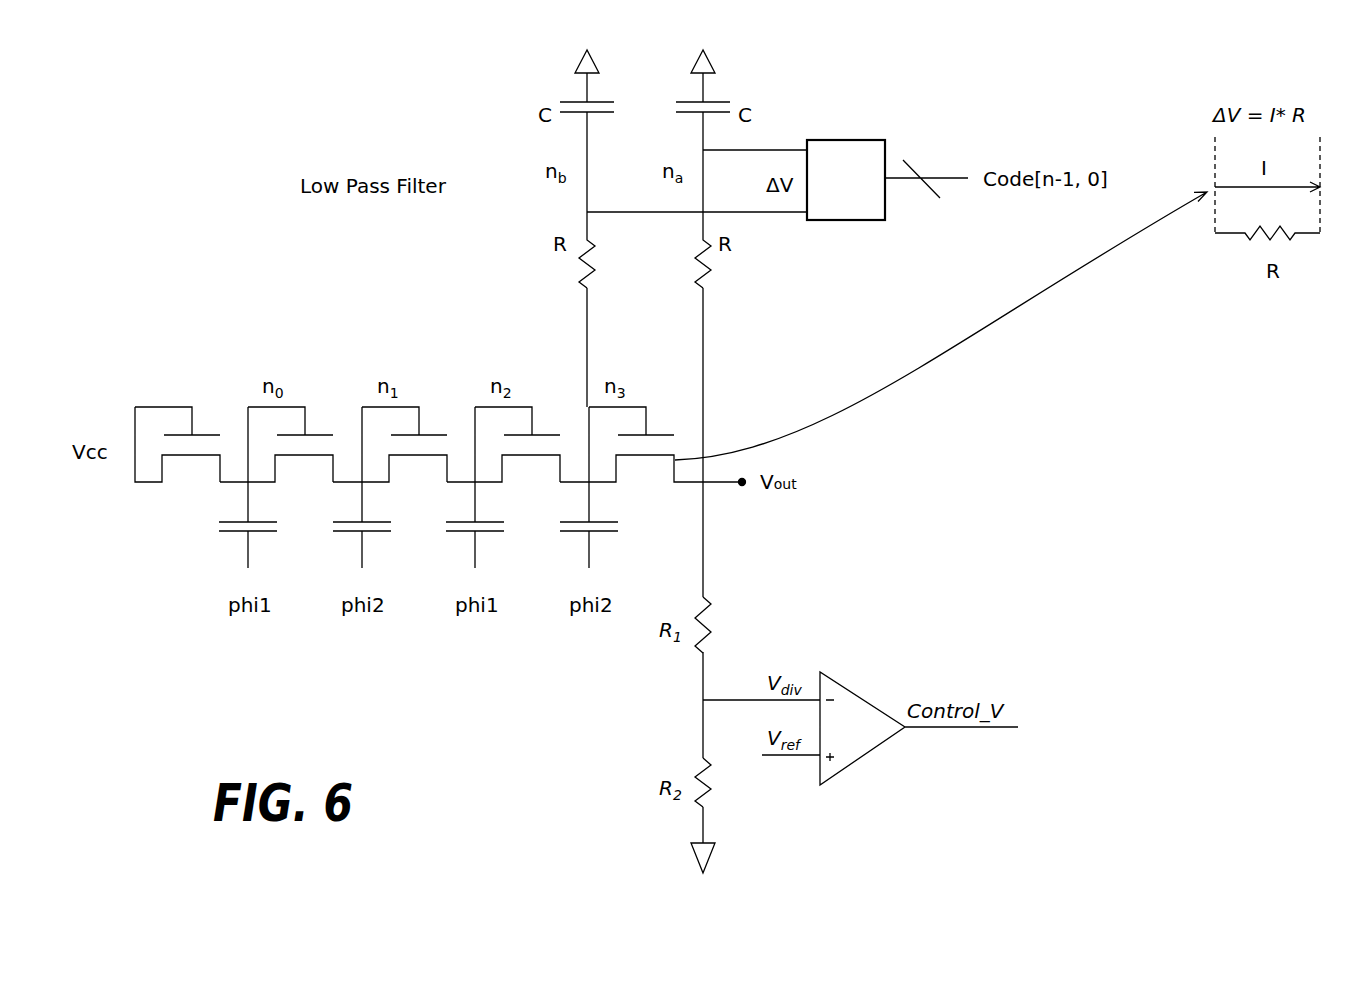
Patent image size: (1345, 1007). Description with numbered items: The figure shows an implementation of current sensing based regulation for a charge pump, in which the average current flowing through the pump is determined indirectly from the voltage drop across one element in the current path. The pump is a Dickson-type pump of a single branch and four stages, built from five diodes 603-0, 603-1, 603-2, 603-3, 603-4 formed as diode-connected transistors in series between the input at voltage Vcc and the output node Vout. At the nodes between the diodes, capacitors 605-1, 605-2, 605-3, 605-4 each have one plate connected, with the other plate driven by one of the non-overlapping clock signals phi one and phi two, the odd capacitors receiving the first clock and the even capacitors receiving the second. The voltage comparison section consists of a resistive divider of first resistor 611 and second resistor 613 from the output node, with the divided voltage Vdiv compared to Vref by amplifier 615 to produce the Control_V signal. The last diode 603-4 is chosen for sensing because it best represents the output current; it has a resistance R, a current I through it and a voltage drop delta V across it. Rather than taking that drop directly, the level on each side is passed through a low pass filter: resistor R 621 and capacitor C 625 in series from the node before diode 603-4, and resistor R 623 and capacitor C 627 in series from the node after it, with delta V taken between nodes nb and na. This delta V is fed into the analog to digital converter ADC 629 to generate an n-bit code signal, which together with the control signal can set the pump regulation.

The diode 603-0 is at (208, 433).
The diode 603-1 is at (321, 433).
The diode 603-2 is at (435, 433).
The diode 603-3 is at (548, 433).
The diode 603-4 is at (656, 433).
The capacitor 605-1 is at (258, 532).
The capacitor 605-2 is at (372, 532).
The capacitor 605-3 is at (485, 532).
The capacitor 605-4 is at (599, 532).
The resistor R1 611 is at (716, 627).
The resistor R2 613 is at (716, 782).
The amplifier 615 is at (838, 674).
The resistor R 621 is at (579, 258).
The resistor R 623 is at (712, 262).
The capacitor C 625 is at (570, 100).
The capacitor C 627 is at (720, 100).
The analog to digital converter ADC 629 is at (848, 140).